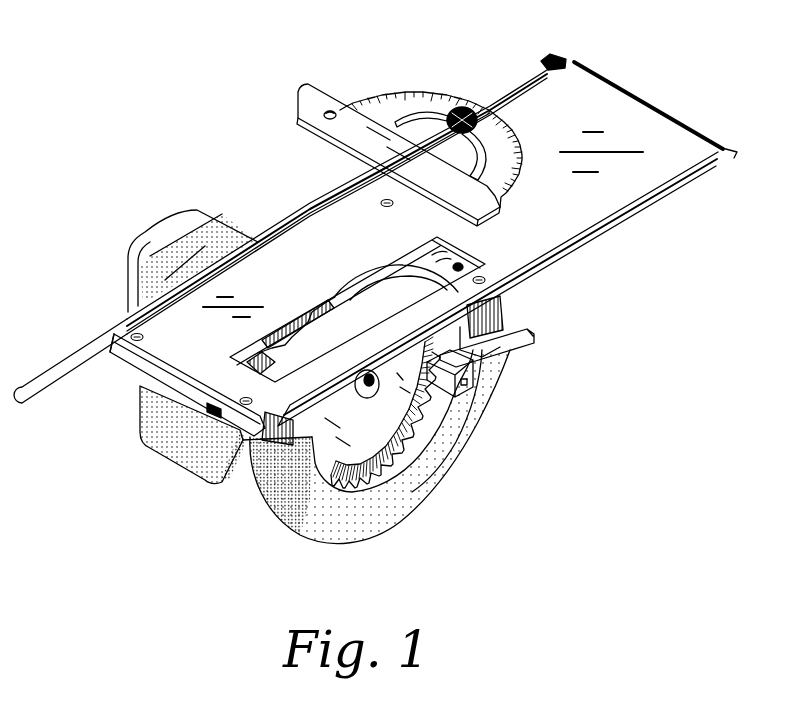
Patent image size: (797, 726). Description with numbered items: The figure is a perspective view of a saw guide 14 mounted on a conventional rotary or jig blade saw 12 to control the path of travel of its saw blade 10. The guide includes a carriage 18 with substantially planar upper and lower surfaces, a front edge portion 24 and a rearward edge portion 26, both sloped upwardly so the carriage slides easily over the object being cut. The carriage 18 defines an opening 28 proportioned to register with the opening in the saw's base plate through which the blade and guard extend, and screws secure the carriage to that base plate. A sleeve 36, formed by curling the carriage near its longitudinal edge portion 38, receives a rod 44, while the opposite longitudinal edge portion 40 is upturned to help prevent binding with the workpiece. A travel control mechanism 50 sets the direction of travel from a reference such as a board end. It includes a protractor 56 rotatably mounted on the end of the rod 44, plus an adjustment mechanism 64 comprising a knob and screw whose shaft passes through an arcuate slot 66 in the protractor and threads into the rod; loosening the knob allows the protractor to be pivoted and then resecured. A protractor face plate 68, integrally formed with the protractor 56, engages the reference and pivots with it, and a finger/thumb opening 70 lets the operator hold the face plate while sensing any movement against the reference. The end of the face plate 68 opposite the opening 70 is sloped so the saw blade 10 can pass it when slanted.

The saw blade 10 is at (390, 431).
The saw 12 is at (257, 494).
The saw guide 14 is at (574, 204).
The carriage 18 is at (634, 110).
The front edge portion 24 is at (127, 358).
The rearward edge portion 26 is at (731, 160).
The opening 28 is at (258, 350).
The sleeve 36 is at (311, 203).
The longitudinal edge portion 38 is at (586, 70).
The opposite longitudinal edge portion 40 is at (647, 200).
The rod 44 is at (68, 357).
The travel control mechanism 50 is at (397, 116).
The protractor 56 is at (400, 93).
The adjustment mechanism 64 is at (500, 127).
The arcuate slot 66 is at (414, 128).
The protractor face plate 68 is at (300, 102).
The finger/thumb opening 70 is at (318, 128).